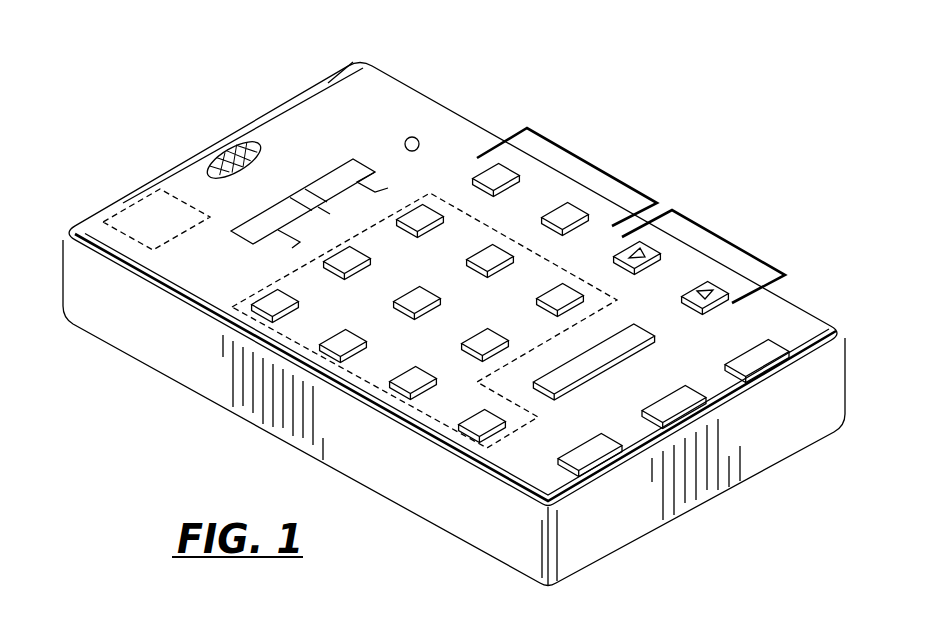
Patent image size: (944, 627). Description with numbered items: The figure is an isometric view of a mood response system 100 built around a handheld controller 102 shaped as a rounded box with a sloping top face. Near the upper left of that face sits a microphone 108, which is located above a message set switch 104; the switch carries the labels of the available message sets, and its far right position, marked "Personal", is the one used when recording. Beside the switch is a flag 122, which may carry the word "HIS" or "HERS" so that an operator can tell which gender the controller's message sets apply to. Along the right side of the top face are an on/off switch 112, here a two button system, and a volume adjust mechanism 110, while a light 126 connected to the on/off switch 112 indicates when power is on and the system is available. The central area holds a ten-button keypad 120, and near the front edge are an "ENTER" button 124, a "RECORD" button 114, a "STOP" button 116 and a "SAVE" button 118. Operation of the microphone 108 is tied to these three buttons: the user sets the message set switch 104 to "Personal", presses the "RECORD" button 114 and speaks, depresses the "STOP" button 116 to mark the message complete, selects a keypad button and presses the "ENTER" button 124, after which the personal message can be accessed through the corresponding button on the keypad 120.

The mood response system 100 is at (575, 121).
The handheld controller 102 is at (135, 332).
The message set switch 104 is at (293, 197).
The microphone 108 is at (235, 152).
The volume adjust mechanism 110 is at (730, 242).
The on/off switch 112 is at (593, 165).
The "RECORD" button 114 is at (598, 457).
The "STOP" button 116 is at (680, 405).
The "SAVE" button 118 is at (757, 360).
The keypad 120 is at (318, 360).
The flag 122 is at (135, 200).
The "ENTER" button 124 is at (562, 378).
The light 126 is at (419, 139).